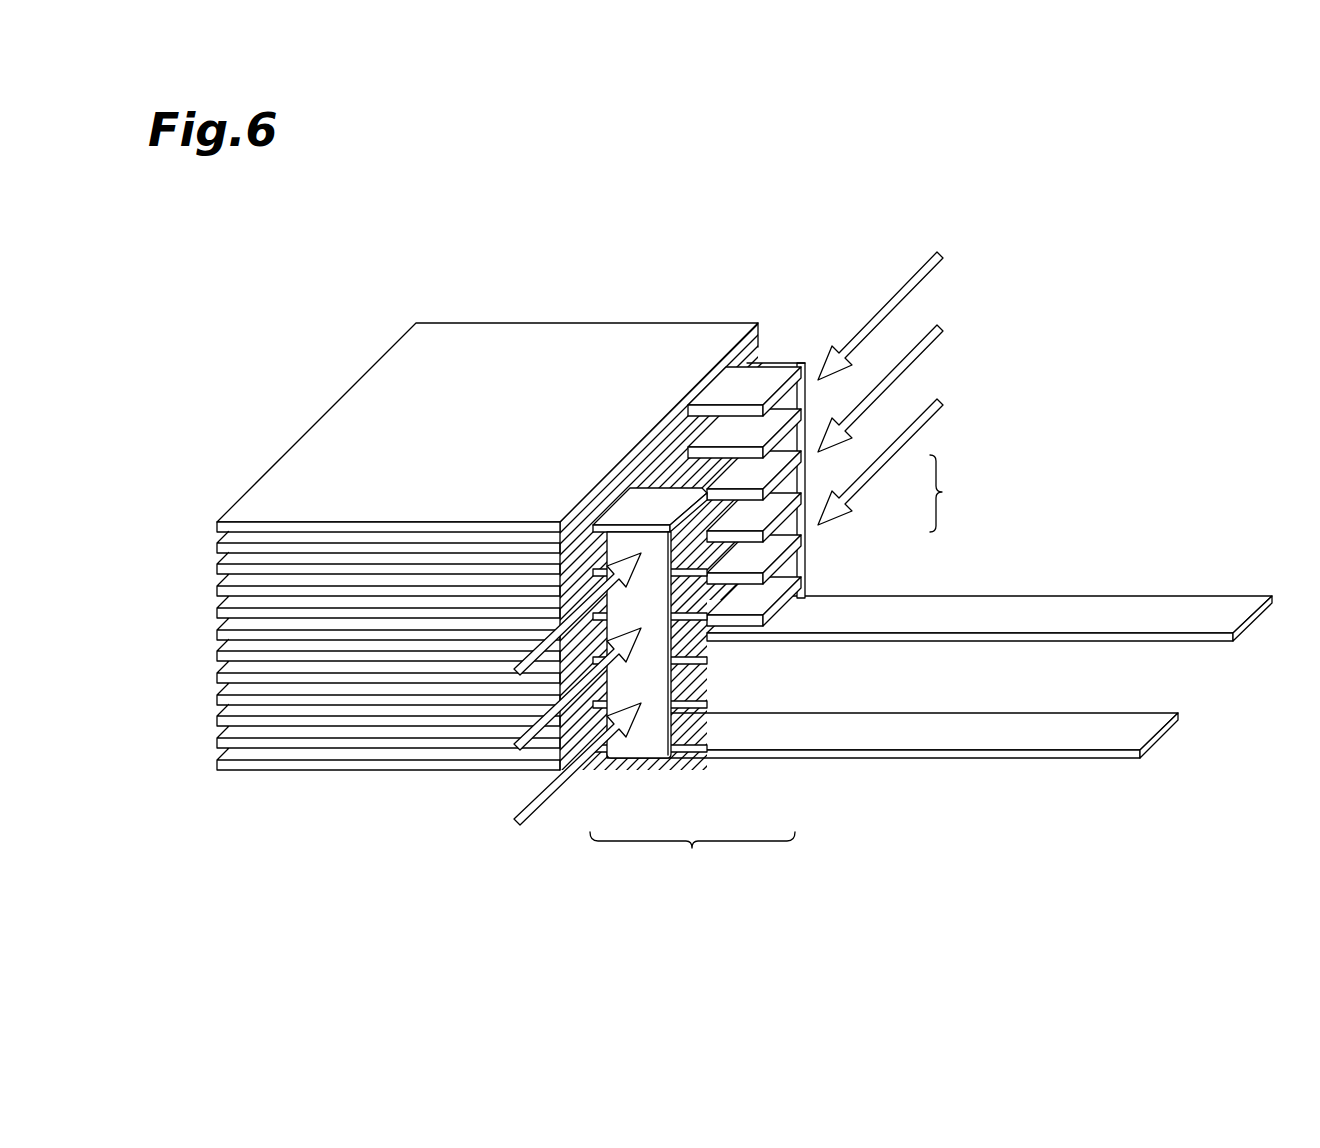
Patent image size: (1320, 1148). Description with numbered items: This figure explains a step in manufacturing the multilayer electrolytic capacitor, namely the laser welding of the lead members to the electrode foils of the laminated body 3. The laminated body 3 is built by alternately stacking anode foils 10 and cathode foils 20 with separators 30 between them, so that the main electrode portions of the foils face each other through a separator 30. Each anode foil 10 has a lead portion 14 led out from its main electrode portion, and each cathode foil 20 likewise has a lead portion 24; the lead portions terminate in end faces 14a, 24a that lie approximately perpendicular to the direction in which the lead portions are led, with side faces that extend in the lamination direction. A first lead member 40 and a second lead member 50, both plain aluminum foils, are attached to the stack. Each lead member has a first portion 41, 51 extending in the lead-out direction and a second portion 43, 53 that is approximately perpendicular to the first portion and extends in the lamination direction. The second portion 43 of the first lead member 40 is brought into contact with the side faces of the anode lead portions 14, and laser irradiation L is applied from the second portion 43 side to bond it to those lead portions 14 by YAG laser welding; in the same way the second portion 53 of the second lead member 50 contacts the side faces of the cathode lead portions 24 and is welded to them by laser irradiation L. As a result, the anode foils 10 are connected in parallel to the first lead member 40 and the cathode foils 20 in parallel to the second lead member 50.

The laminated body 3 is at (676, 254).
The anode foil 10 is at (585, 525).
The lead portion 14 is at (650, 560).
The end face 14a is at (700, 497).
The cathode foil 20 is at (749, 335).
The lead portion 24 is at (765, 448).
The end face 24a is at (795, 370).
The separator 30 is at (457, 342).
The first lead member 40 is at (792, 565).
The first portion 41 is at (775, 755).
The second portion 43 is at (637, 737).
The second lead member 50 is at (792, 508).
The first portion 51 is at (895, 592).
The second portion 53 is at (810, 470).
The laser irradiation L is at (955, 243).